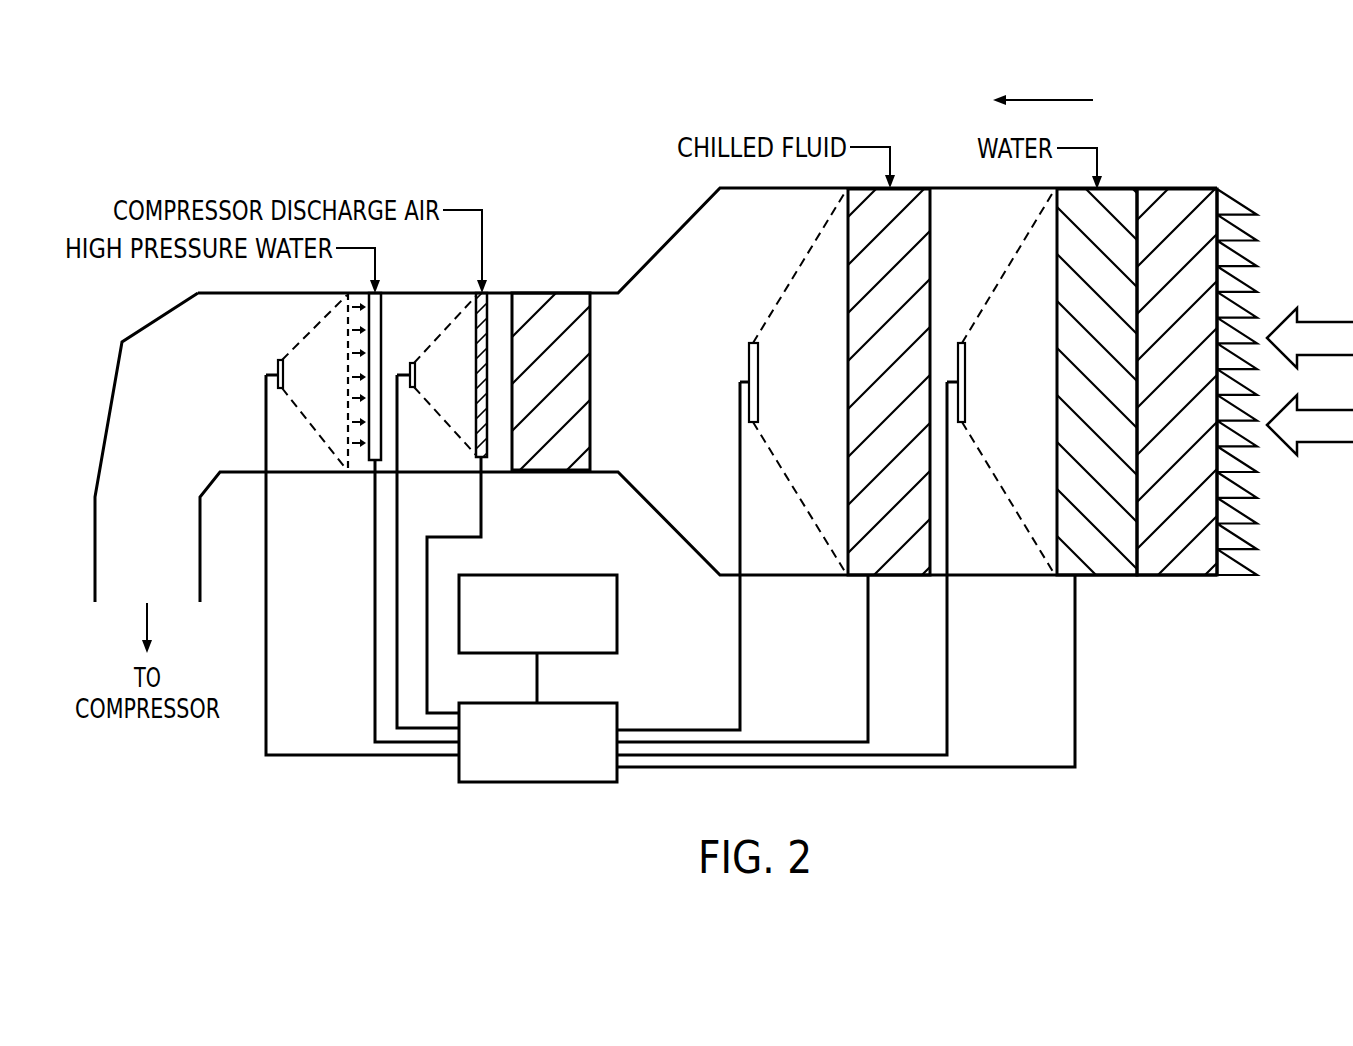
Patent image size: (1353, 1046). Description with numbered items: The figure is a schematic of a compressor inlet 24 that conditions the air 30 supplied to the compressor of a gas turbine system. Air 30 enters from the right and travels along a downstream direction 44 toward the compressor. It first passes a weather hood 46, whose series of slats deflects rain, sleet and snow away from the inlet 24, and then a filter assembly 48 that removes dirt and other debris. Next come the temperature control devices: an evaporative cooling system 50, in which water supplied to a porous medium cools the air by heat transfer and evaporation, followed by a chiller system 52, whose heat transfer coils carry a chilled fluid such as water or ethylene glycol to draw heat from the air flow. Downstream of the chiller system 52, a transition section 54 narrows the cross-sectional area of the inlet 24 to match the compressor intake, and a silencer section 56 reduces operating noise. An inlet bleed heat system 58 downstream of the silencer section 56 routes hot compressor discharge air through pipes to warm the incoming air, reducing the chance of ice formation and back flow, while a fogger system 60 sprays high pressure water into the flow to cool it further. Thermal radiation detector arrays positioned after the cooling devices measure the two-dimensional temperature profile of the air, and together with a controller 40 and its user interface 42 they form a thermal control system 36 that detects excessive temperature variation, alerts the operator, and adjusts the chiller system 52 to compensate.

The compressor inlet 24 is at (553, 181).
The air 30 is at (1327, 322).
The thermal control system 36 is at (486, 678).
The controller 40 is at (540, 782).
The user interface 42 is at (538, 575).
The downstream direction 44 is at (1073, 100).
The weather hood 46 is at (1235, 578).
The filter assembly 48 is at (1177, 189).
The evaporative cooling system 50 is at (1105, 578).
The chiller system 52 is at (893, 578).
The transition section 54 is at (697, 212).
The silencer section 56 is at (575, 292).
The inlet bleed heat system 58 is at (488, 310).
The fogger system 60 is at (383, 306).